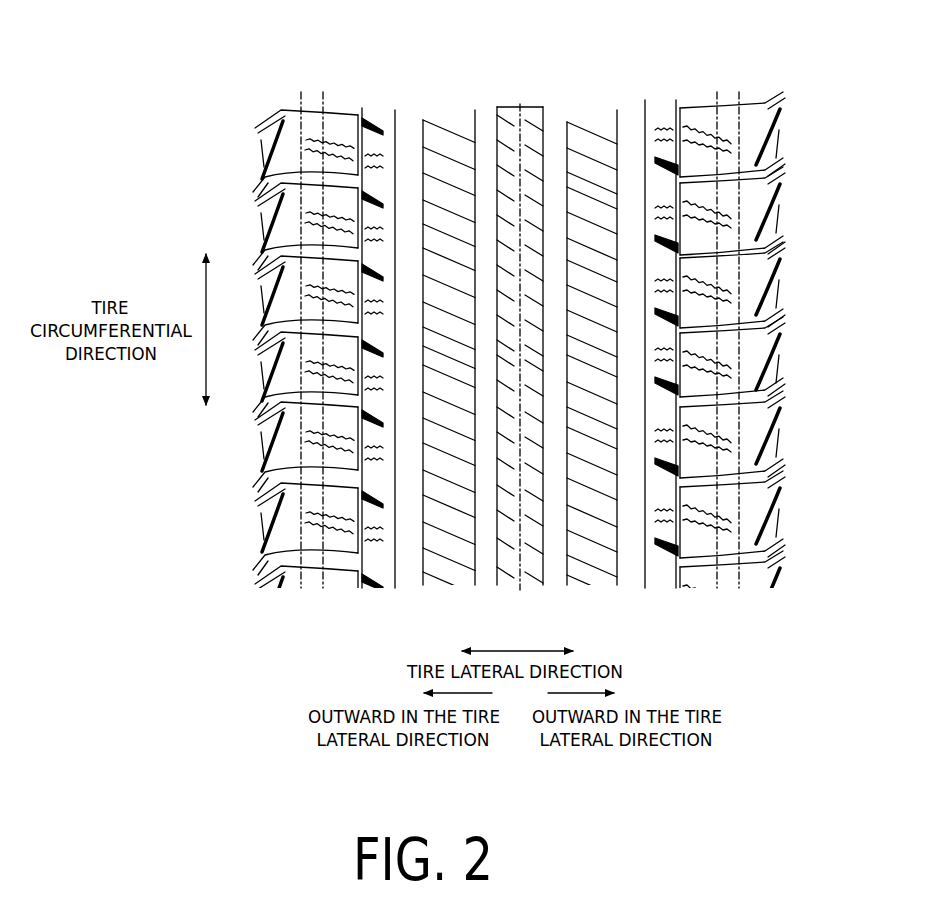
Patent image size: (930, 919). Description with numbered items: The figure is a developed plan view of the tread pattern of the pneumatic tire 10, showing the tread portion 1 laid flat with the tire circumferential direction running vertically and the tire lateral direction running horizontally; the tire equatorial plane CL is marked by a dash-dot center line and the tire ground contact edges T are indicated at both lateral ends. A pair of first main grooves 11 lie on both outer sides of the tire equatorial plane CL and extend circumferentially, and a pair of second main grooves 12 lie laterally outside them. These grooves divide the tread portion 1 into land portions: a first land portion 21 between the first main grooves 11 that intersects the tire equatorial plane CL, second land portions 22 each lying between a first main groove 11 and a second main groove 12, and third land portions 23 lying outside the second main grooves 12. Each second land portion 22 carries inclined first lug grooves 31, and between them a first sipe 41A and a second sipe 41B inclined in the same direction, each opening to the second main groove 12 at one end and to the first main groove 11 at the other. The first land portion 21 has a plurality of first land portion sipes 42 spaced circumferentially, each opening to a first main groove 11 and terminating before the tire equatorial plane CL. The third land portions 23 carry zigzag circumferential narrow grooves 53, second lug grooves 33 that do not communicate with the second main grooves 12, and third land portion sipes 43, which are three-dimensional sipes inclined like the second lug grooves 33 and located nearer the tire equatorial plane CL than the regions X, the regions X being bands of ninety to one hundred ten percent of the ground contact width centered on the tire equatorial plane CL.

The tread portion 1 is at (713, 82).
The pneumatic tire 10 is at (793, 73).
The first main groove 11 is at (491, 112).
The second main groove 12 is at (418, 108).
The first land portion 21 is at (493, 594).
The second land portion 22 is at (420, 594).
The third land portion 23 is at (256, 594).
The first lug groove 31 is at (426, 119).
The second lug groove 33 is at (290, 167).
The first sipe 41A is at (460, 162).
The second sipe 41B is at (438, 112).
The first land portion sipe 42 is at (508, 112).
The third land portion sipe 43 is at (388, 118).
The circumferential narrow groove 53 is at (345, 120).
The tire ground contact edge T is at (303, 100).
The region X is at (277, 92).
The tire equatorial plane CL is at (520, 104).